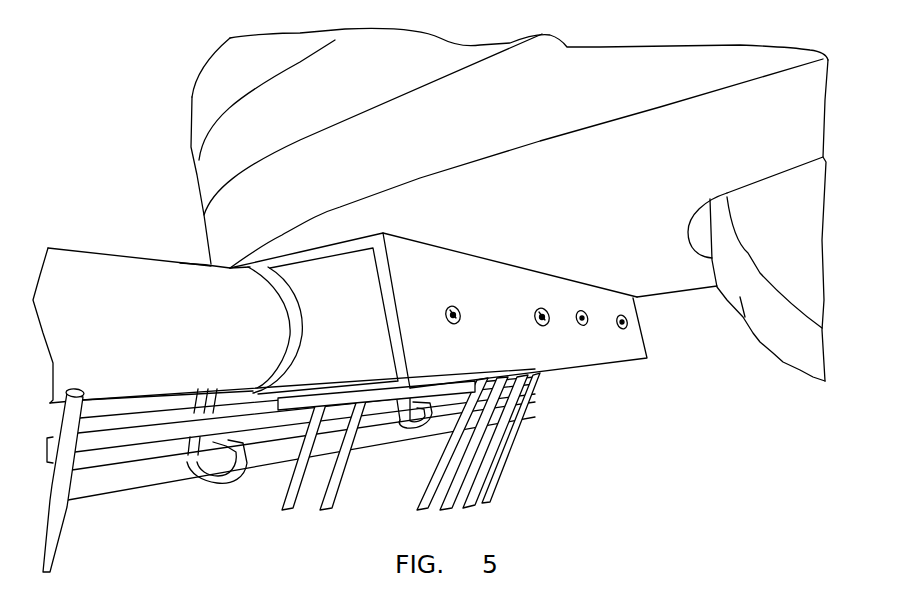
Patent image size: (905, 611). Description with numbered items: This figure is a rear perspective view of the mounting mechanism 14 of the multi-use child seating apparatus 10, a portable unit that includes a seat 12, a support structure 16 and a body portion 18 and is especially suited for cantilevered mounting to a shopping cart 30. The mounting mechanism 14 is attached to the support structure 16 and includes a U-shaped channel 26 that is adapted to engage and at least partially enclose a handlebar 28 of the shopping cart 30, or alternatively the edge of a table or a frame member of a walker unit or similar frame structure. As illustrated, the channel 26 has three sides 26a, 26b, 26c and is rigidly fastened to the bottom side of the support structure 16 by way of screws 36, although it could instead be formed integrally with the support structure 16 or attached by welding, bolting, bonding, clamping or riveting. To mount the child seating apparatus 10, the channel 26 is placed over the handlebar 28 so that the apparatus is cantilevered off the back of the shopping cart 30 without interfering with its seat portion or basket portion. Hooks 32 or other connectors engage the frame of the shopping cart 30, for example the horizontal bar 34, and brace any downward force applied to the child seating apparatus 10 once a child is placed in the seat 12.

The multi-use child seating apparatus 10 is at (128, 130).
The seat 12 is at (803, 231).
The mounting mechanism 14 is at (183, 492).
The support structure 16 is at (626, 176).
The body portion 18 is at (213, 78).
The U-shaped channel 26 is at (548, 362).
The first side of channel 26a is at (338, 240).
The second side of channel 26b is at (502, 283).
The third side of channel 26c is at (325, 397).
The handlebar 28 is at (128, 275).
The shopping cart 30 is at (510, 451).
The hooks 32 is at (233, 477).
The horizontal bar 34 is at (263, 457).
The screws 36 is at (538, 327).